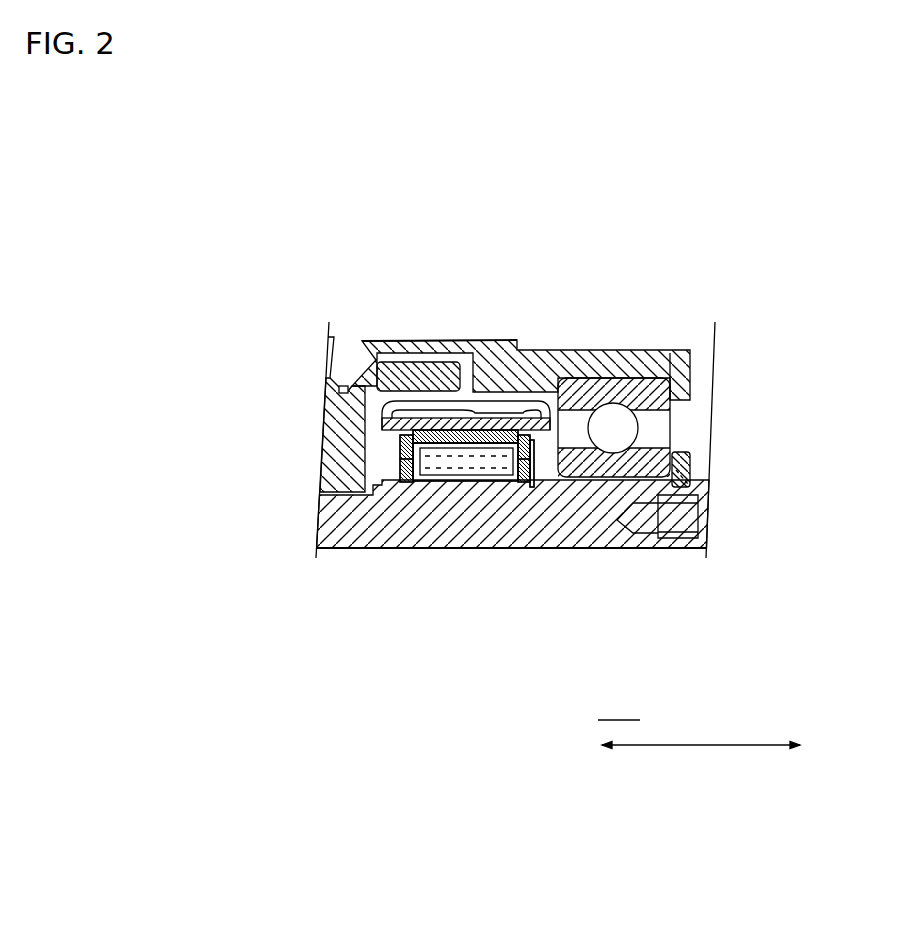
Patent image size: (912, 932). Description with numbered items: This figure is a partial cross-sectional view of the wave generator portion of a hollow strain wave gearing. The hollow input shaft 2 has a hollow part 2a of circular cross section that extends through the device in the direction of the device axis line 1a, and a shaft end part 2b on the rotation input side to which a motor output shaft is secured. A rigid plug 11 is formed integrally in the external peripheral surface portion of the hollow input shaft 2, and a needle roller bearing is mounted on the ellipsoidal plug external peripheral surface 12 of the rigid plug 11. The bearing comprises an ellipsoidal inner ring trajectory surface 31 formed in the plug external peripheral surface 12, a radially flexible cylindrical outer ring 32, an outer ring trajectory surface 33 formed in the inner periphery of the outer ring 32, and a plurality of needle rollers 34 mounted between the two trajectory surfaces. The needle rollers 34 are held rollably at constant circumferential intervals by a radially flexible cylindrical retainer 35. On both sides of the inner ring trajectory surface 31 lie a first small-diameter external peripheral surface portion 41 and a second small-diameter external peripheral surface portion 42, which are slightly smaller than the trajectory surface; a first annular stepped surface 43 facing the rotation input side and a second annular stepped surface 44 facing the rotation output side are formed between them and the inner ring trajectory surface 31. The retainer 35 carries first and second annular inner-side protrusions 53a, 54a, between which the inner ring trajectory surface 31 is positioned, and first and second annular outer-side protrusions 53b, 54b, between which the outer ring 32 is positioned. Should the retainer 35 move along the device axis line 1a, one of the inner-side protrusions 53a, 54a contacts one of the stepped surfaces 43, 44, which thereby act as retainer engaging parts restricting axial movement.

The hollow input shaft 2 is at (615, 549).
The hollow part 2a is at (619, 703).
The shaft end part 2b is at (683, 540).
The rigid plug 11 is at (392, 520).
The plug external peripheral surface 12 is at (511, 482).
The inner ring trajectory surface 31 is at (484, 460).
The outer ring 32 is at (480, 431).
The outer ring trajectory surface 33 is at (497, 455).
The needle rollers 34 is at (434, 448).
The retainer 35 is at (398, 432).
The first small-diameter external peripheral surface portion 41 is at (527, 480).
The second small-diameter external peripheral surface portion 42 is at (394, 479).
The first annular stepped surface 43 is at (519, 480).
The second annular stepped surface 44 is at (412, 484).
The first annular inner-side protrusion 53a is at (527, 474).
The first annular outer-side protrusion 53b is at (530, 443).
The second annular inner-side protrusion 54a is at (402, 477).
The second annular outer-side protrusion 54b is at (403, 445).
The device axis line 1a is at (693, 746).